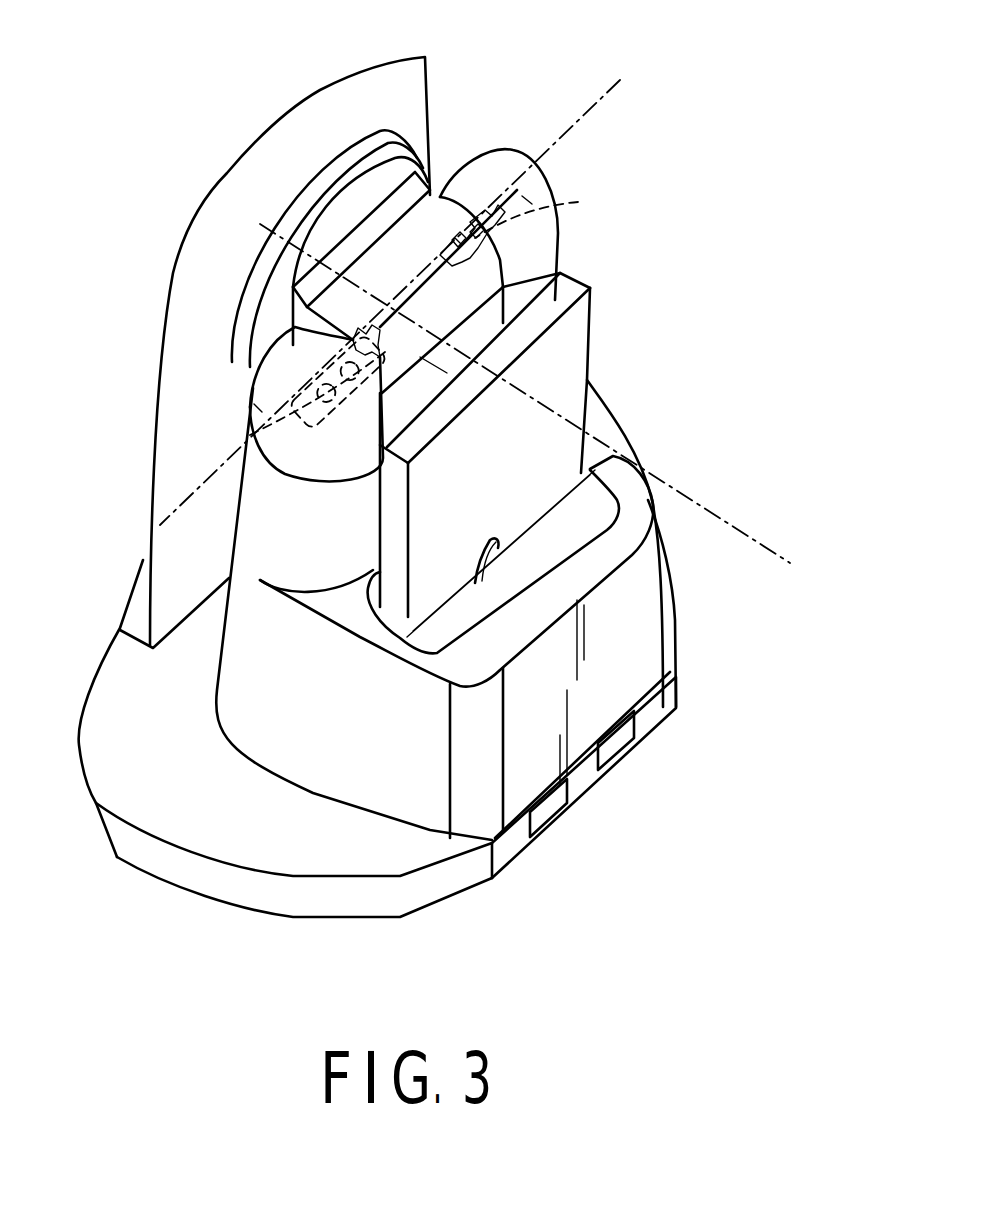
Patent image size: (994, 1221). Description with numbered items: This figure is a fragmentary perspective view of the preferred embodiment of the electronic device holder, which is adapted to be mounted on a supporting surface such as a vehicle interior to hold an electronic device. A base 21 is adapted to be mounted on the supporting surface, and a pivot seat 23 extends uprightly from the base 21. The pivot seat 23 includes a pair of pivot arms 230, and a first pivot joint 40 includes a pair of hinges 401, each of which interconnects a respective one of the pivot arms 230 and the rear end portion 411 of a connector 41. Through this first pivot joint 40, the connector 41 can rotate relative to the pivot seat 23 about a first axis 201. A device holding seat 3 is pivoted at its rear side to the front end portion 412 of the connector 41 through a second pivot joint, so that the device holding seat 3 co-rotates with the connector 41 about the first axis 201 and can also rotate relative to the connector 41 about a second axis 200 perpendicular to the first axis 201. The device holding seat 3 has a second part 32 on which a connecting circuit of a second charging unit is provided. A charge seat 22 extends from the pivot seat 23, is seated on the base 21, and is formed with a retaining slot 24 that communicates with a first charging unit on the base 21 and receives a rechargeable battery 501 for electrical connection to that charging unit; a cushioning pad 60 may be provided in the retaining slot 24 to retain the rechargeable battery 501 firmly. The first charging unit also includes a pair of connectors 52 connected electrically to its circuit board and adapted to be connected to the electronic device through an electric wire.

The device holding seat 3 is at (193, 172).
The base 21 is at (395, 850).
The charge seat 22 is at (630, 643).
The pivot seat 23 is at (545, 255).
The retaining slot 24 is at (625, 462).
The second part 32 is at (217, 297).
The first pivot joint 40 is at (307, 433).
The connector 41 is at (438, 222).
The hinges 401 is at (580, 202).
The rear end portion 411 is at (457, 215).
The front end portion 412 is at (367, 165).
The rechargeable battery 501 is at (560, 343).
The connectors 52 is at (555, 808).
The cushioning pad 60 is at (540, 553).
The second axis 200 is at (552, 410).
The first axis 201 is at (407, 286).
The pivot arms 230 is at (527, 200).